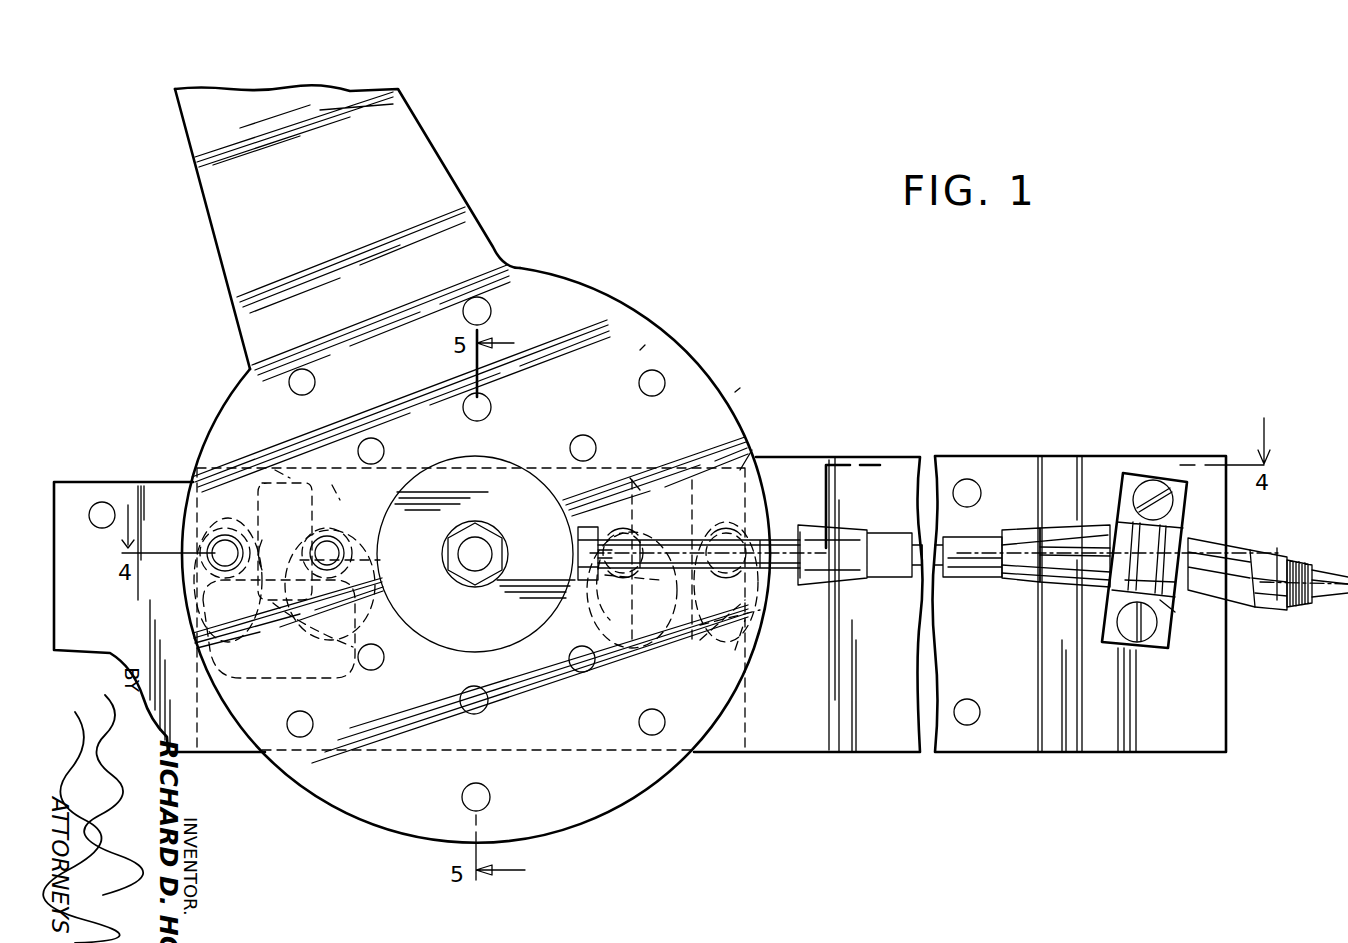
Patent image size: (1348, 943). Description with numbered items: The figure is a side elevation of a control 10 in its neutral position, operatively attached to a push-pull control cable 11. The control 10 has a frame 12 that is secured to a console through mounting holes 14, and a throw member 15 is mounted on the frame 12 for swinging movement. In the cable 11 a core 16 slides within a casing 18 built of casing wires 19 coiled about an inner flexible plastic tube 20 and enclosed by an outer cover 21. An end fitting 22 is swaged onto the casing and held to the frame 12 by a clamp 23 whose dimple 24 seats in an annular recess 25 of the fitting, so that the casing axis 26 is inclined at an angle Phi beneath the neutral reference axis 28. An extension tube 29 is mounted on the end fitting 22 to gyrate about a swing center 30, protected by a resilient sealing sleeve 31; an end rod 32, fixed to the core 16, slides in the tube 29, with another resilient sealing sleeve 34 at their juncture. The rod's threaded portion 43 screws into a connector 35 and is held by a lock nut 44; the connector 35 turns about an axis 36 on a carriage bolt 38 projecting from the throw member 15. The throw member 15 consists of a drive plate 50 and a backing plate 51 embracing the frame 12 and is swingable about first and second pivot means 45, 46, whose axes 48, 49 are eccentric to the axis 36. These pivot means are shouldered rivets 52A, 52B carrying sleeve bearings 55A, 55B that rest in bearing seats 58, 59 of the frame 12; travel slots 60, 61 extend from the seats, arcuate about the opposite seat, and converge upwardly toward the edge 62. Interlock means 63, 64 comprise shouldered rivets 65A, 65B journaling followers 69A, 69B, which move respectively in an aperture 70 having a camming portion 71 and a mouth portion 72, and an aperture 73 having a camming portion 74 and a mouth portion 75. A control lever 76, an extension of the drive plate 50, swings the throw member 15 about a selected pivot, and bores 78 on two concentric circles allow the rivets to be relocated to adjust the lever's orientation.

The control 10 is at (754, 386).
The push-pull control cable 11 is at (1300, 535).
The frame 12 is at (876, 735).
The mounting holes 14 is at (965, 727).
The throw member 15 is at (658, 344).
The core 16 is at (1304, 563).
The casing 18 is at (1282, 538).
The casing wires 19 is at (1300, 606).
The inner flexible plastic tube 20 is at (1338, 600).
The outer cover 21 is at (1272, 603).
The end fitting 22 is at (1215, 545).
The clamp 23 is at (1148, 608).
The dimple 24 is at (1165, 585).
The annular recess 25 is at (1130, 515).
The casing axis 26 is at (1060, 535).
The neutral reference axis 28 is at (1032, 580).
The extension tube 29 is at (985, 575).
The swing center 30 is at (1066, 583).
The resilient sealing sleeve 31 is at (1020, 540).
The end rod 32 is at (802, 540).
The resilient sealing sleeve 34 is at (848, 575).
The connector 35 is at (485, 468).
The axis 36 is at (480, 552).
The carriage bolt 38 is at (475, 580).
The threaded portion 43 is at (592, 575).
The lock nut 44 is at (582, 535).
The first pivot means 45 is at (305, 580).
The second pivot means 46 is at (638, 578).
The axis 48 is at (330, 545).
The axis 49 is at (630, 540).
The drive plate 50 is at (568, 290).
The backing plate 51 is at (275, 468).
The shouldered rivet 52A is at (350, 598).
The shouldered rivet 52B is at (632, 590).
The sleeve bearing 55A is at (368, 555).
The sleeve bearing 55B is at (647, 560).
The bearing seat 58 is at (323, 574).
The bearing seat 59 is at (609, 590).
The travel slot 60 is at (332, 485).
The travel slot 61 is at (630, 478).
The edge 62 is at (95, 482).
The interlock means 63 is at (204, 578).
The interlock means 64 is at (738, 582).
The shouldered rivet 65A is at (229, 525).
The shouldered rivet 65B is at (731, 528).
The follower 69A is at (205, 525).
The follower 69B is at (768, 585).
The aperture 70 is at (258, 657).
The camming portion 71 is at (290, 668).
The mouth portion 72 is at (250, 525).
The aperture 73 is at (748, 645).
The camming portion 74 is at (672, 635).
The mouth portion 75 is at (752, 450).
The control lever 76 is at (428, 172).
The bores 78 is at (315, 383).